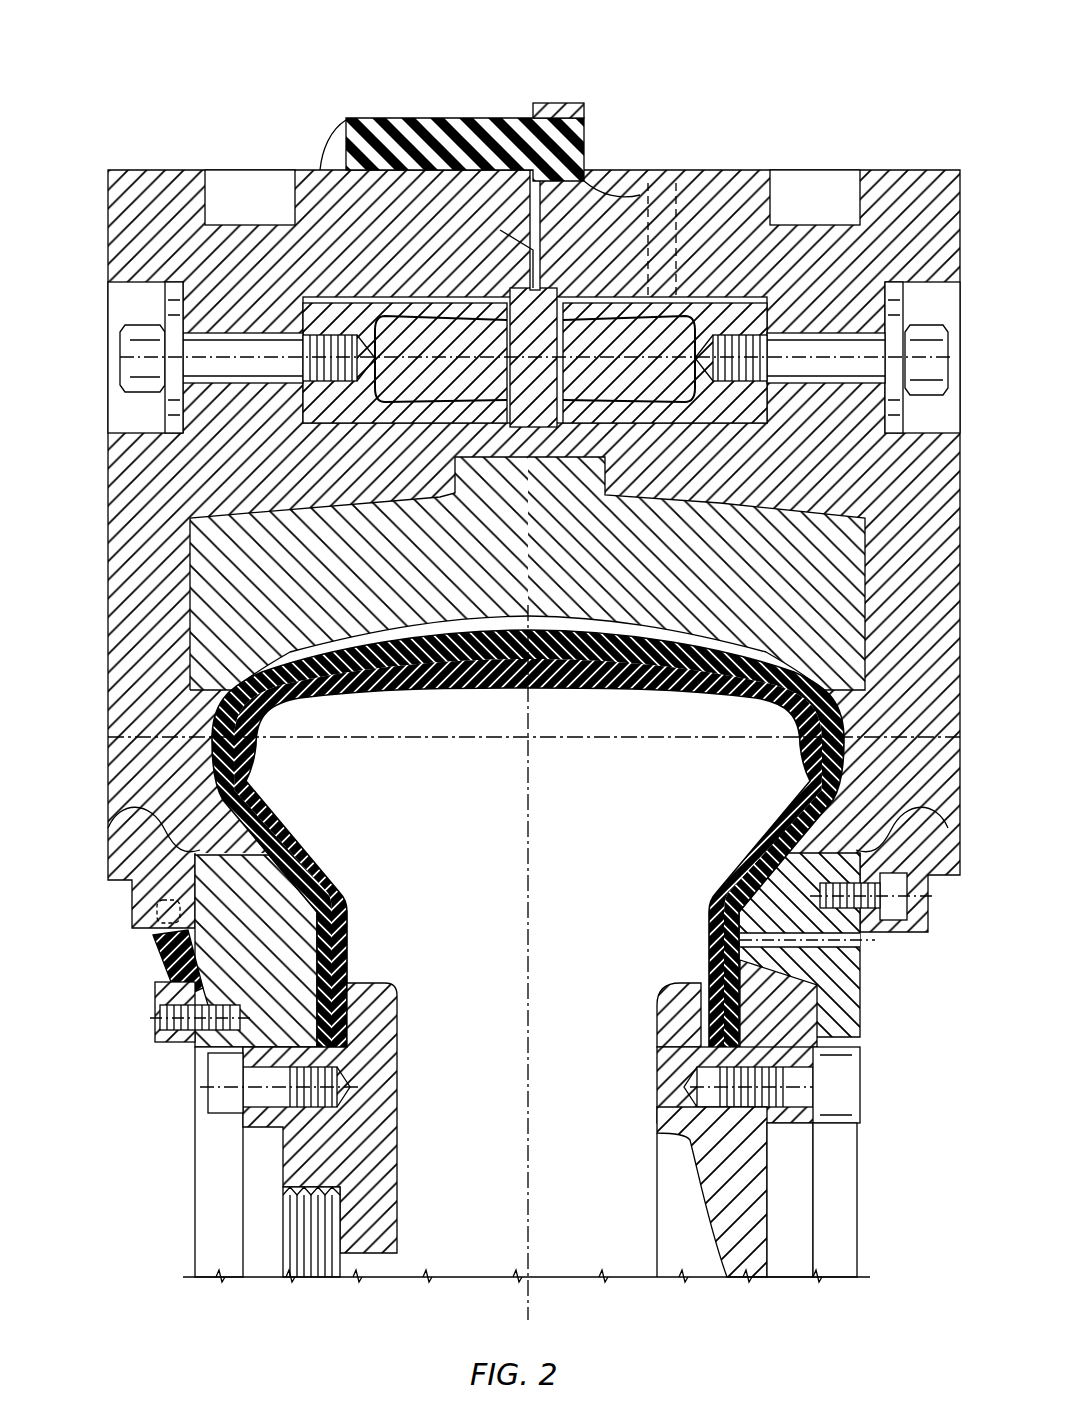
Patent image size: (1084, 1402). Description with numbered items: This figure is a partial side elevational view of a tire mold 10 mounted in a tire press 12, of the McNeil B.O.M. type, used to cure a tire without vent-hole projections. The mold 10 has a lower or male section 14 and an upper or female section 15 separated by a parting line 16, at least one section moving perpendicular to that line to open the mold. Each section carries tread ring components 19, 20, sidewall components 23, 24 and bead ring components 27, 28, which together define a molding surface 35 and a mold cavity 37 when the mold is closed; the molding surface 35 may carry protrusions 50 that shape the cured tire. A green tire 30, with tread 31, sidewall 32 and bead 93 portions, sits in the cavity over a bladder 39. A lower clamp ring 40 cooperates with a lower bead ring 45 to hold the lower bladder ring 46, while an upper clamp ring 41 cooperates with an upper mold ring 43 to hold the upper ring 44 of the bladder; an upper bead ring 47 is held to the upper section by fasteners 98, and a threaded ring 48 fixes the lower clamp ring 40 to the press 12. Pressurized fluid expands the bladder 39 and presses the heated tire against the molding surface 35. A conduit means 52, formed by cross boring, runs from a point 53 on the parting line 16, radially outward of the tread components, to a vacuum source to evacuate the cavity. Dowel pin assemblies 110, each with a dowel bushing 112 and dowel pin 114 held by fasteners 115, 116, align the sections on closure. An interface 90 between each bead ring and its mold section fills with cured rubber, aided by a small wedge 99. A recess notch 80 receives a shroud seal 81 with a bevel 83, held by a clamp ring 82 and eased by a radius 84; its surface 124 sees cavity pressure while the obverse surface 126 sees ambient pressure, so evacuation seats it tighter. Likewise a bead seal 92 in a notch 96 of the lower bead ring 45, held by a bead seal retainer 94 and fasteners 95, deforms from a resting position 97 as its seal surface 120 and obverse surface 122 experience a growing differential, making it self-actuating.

The mold 10 is at (262, 98).
The tire press 12 is at (160, 1222).
The lower or male section 14 is at (168, 170).
The upper or female section 15 is at (912, 170).
The parting line 16 is at (658, 170).
The tread ring component 19 is at (254, 549).
The tread ring component 20 is at (823, 555).
The sidewall component 23 is at (181, 764).
The sidewall component 24 is at (894, 770).
The bead ring component 27 is at (233, 870).
The bead ring component 28 is at (839, 875).
The green tire 30 is at (853, 645).
The tread portion 31 is at (529, 650).
The sidewall portion 32 is at (522, 723).
The molding surface 35 is at (272, 777).
The mold cavity 37 is at (556, 767).
The bladder 39 is at (408, 692).
The lower clamp ring 40 is at (385, 1115).
The upper clamp ring 41 is at (665, 1080).
The upper mold ring 43 is at (856, 1058).
The upper ring of the bladder 44 is at (690, 1020).
The lower bead ring 45 is at (318, 953).
The lower bladder ring 46 is at (395, 1002).
The upper bead ring 47 is at (852, 988).
The threaded ring 48 is at (337, 1265).
The protrusions 50 is at (620, 632).
The conduit means 52 is at (700, 185).
The point 53 is at (622, 436).
The recess notch 80 is at (612, 170).
The shroud seal 81 is at (475, 118).
The clamp ring 82 is at (558, 105).
The bevel 83 is at (342, 158).
The chamber or radius 84 is at (450, 200).
The interface 90 is at (160, 822).
The bead seal 92 is at (190, 975).
The diaphragm bend 93 is at (718, 902).
The bead seal retainer 94 is at (165, 1042).
The fasteners 95 is at (210, 1055).
The recess or notch 96 is at (240, 952).
The resting position 97 is at (185, 908).
The fasteners 98 is at (900, 902).
The small wedge 99 is at (760, 832).
The dowel pin assembly 110 is at (150, 305).
The dowel bushing 112 is at (357, 420).
The dowel pin 114 is at (735, 405).
The fastener 115 is at (173, 400).
The fastener 116 is at (928, 328).
The seal surface 120 is at (200, 950).
The obverse surface 122 is at (178, 942).
The surface 124 is at (318, 170).
The obverse surface 126 is at (405, 118).